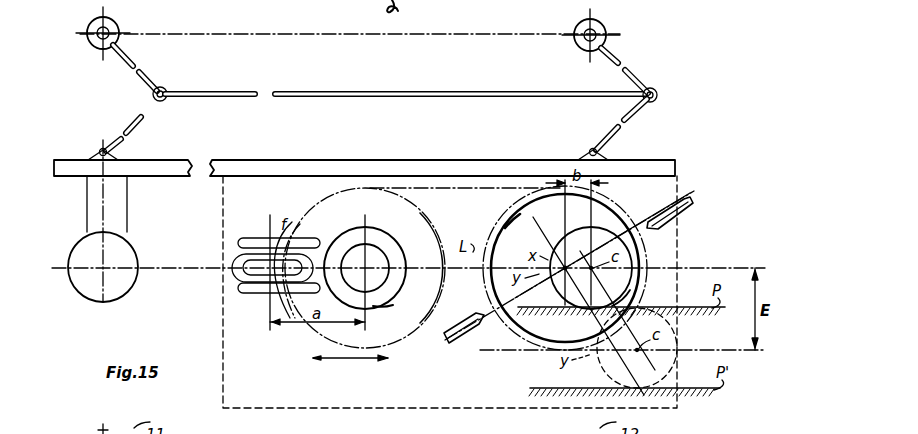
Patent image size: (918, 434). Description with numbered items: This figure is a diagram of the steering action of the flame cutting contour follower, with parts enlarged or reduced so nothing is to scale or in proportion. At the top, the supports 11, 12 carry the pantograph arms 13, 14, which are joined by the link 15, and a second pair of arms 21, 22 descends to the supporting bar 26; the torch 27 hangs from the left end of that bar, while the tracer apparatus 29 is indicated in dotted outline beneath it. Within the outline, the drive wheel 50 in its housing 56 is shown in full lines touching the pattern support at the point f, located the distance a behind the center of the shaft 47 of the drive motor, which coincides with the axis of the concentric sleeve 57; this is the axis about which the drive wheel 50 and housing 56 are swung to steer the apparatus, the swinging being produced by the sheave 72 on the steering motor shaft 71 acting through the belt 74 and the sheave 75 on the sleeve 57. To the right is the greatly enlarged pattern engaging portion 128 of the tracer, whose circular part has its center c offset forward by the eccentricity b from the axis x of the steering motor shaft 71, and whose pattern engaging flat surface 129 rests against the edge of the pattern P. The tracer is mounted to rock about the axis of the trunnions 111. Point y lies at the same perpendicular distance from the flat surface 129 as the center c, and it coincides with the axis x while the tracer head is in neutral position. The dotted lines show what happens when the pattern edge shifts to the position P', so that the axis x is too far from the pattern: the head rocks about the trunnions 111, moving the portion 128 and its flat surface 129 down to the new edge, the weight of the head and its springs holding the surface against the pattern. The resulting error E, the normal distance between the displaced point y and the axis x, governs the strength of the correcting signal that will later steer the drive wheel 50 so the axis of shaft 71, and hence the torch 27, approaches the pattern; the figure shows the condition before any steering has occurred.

The support 11 is at (114, 24).
The support 12 is at (606, 25).
The arm 13 is at (145, 71).
The arm 14 is at (630, 75).
The link 15 is at (412, 76).
The arm 21 is at (145, 112).
The arm 22 is at (634, 112).
The supporting bar 26 is at (444, 160).
The torch 27 is at (92, 252).
The tracer apparatus 29 is at (677, 224).
The shaft of the drive motor 47 is at (378, 262).
The drive wheel 50 is at (236, 273).
The housing 56 is at (324, 246).
The concentric sleeve 57 is at (390, 298).
The steering motor shaft 71 is at (514, 228).
The sheave 72 is at (496, 200).
The belt 74 is at (410, 188).
The sheave 75 is at (438, 228).
The trunnions 111 is at (460, 342).
The pattern engaging portion 128 is at (604, 240).
The pattern engaging flat surface 129 is at (642, 286).